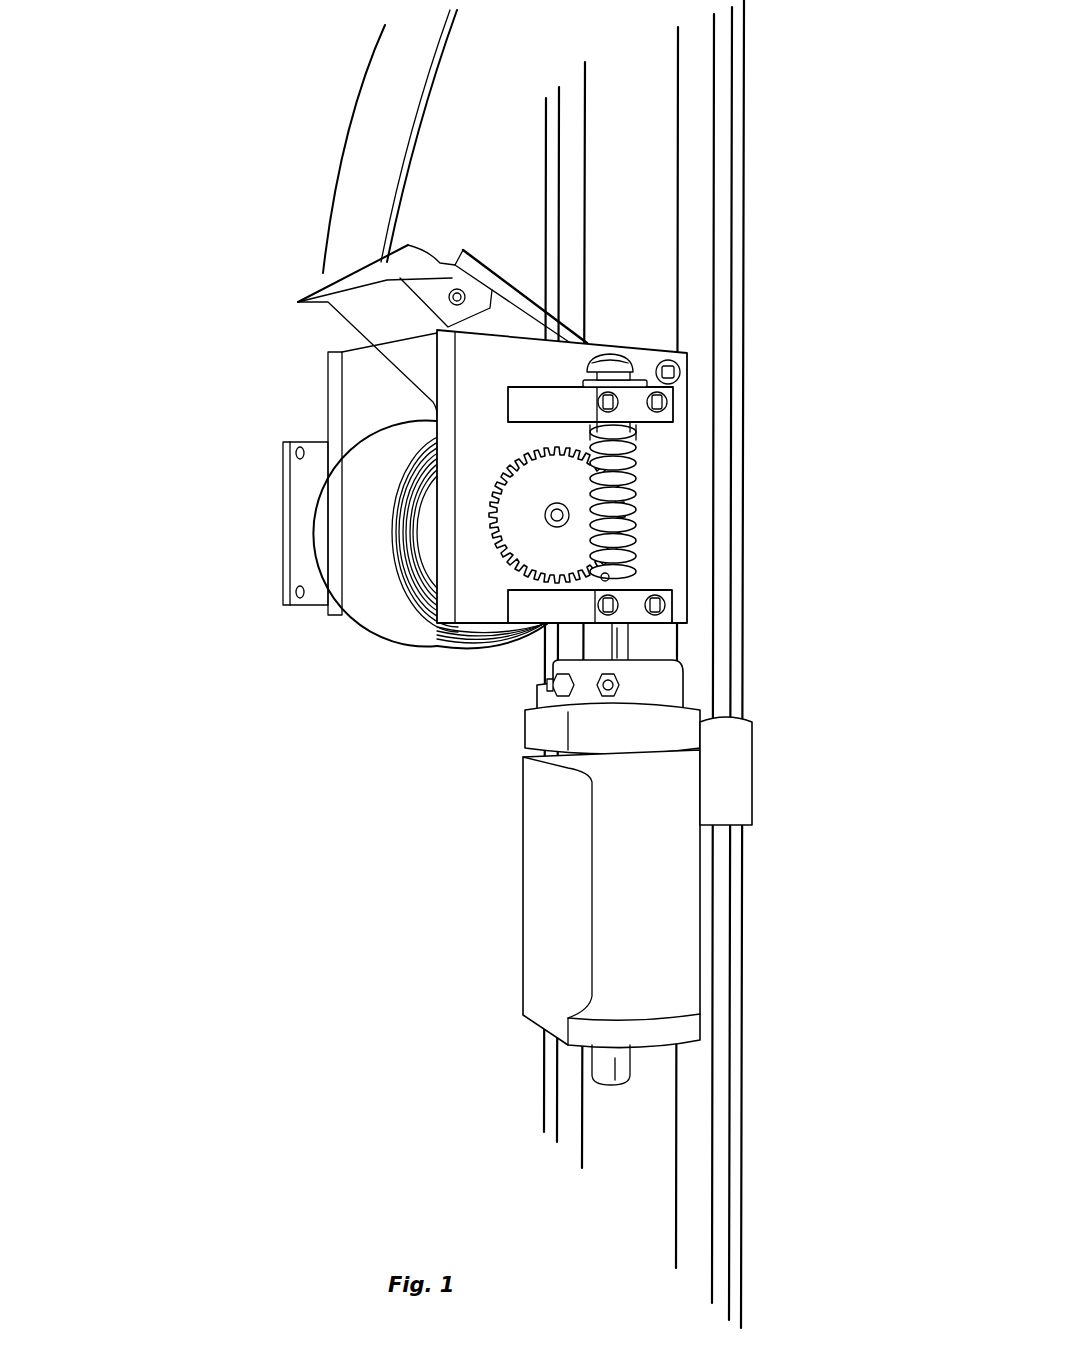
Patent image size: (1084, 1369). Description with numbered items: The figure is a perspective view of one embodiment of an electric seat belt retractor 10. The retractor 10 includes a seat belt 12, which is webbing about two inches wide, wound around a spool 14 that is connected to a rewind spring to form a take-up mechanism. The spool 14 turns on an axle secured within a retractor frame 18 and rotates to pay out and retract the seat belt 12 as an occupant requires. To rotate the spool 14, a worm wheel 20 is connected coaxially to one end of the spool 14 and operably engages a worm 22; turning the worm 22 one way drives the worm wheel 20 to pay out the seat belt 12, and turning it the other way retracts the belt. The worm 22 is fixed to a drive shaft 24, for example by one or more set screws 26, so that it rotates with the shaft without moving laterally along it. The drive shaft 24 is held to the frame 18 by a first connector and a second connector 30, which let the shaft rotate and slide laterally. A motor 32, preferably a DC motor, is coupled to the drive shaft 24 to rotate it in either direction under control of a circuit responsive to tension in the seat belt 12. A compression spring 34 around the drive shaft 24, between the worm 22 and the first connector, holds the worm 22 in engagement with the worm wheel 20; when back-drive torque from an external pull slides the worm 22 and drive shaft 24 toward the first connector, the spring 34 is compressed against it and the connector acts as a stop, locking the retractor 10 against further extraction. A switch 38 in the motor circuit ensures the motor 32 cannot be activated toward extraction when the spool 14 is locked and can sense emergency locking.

The electric seat belt retractor 10 is at (228, 247).
The seat belt 12 is at (383, 51).
The spool 14 is at (362, 672).
The retractor frame 18 is at (504, 364).
The worm wheel 20 is at (603, 577).
The worm 22 is at (640, 520).
The drive shaft 24 is at (597, 431).
The set screw 26 is at (578, 588).
The second connector 30 is at (633, 603).
The motor 32 is at (655, 840).
The compression spring 34 is at (633, 446).
The switch 38 is at (641, 350).